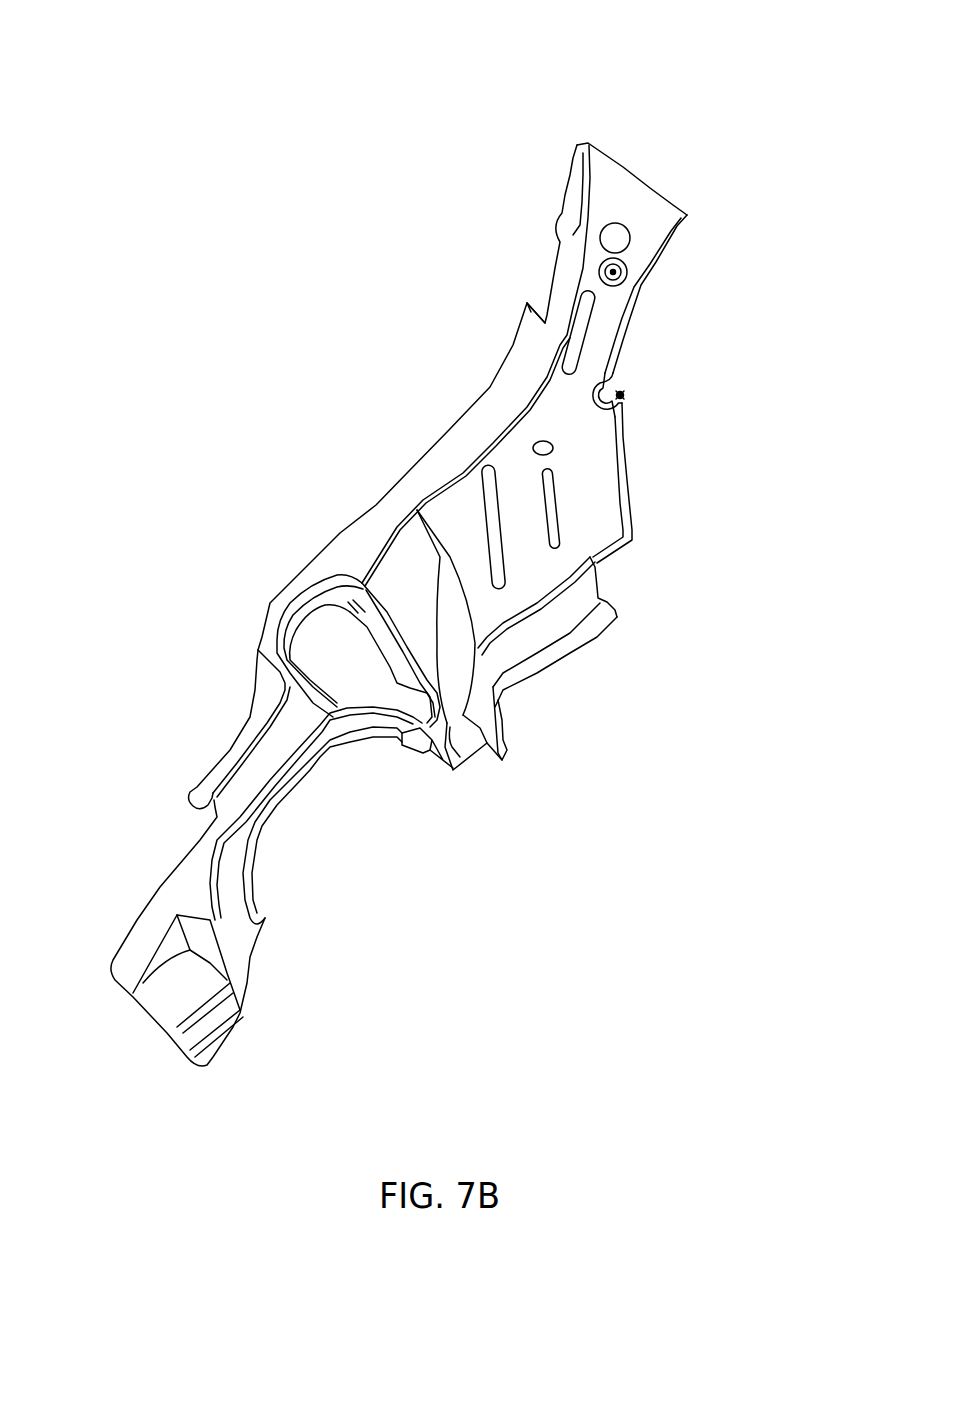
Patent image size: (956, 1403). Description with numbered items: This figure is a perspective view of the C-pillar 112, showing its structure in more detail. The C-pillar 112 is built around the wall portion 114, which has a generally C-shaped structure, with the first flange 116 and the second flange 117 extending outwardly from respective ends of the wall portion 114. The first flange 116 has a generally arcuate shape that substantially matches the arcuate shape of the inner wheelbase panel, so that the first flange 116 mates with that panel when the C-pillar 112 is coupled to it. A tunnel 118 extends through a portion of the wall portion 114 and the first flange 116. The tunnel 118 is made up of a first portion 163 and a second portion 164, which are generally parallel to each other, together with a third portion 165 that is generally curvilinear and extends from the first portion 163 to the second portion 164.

The C-pillar 112 is at (536, 79).
The wall portion 114 is at (580, 384).
The first flange 116 is at (650, 275).
The second flange 117 is at (537, 328).
The tunnel 118 is at (627, 397).
The first portion 163 is at (623, 401).
The second portion 164 is at (615, 390).
The third portion 165 is at (621, 393).